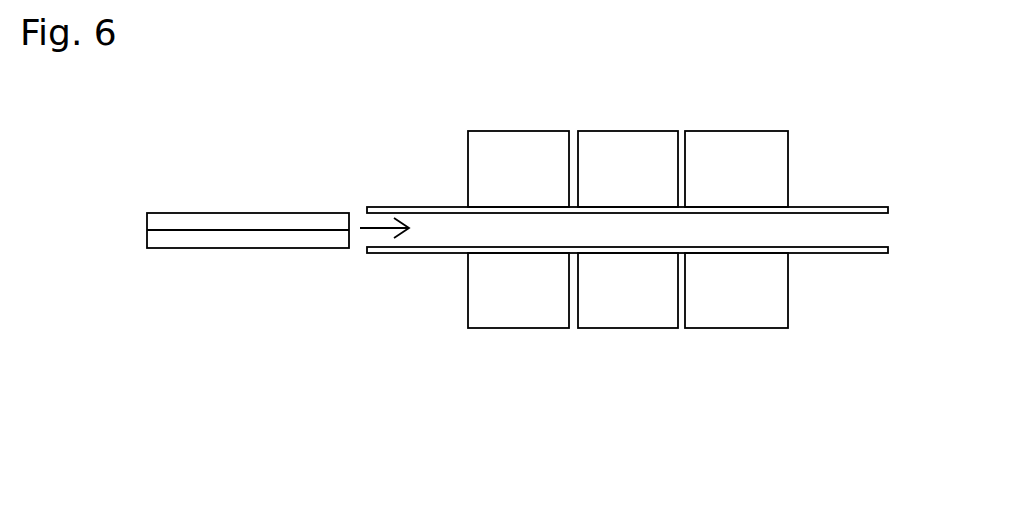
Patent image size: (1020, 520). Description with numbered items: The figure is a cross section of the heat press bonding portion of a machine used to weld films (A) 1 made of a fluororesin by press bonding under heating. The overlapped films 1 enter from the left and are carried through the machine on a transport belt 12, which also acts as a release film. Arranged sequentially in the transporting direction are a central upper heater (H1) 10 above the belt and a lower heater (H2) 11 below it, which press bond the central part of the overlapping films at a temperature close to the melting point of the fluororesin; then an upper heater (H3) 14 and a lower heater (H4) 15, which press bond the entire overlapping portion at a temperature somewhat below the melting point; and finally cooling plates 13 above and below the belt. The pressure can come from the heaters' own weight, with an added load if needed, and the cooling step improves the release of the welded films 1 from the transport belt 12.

The film (A) made of a fluororesin 1 is at (275, 221).
The central upper heater (H1) 10 is at (492, 165).
The lower heater (H2) 11 is at (500, 272).
The transport belt (release film) 12 is at (822, 205).
The cooling plate 13 is at (720, 167).
The upper heater (H3) 14 is at (616, 166).
The lower heater (H4) 15 is at (618, 280).